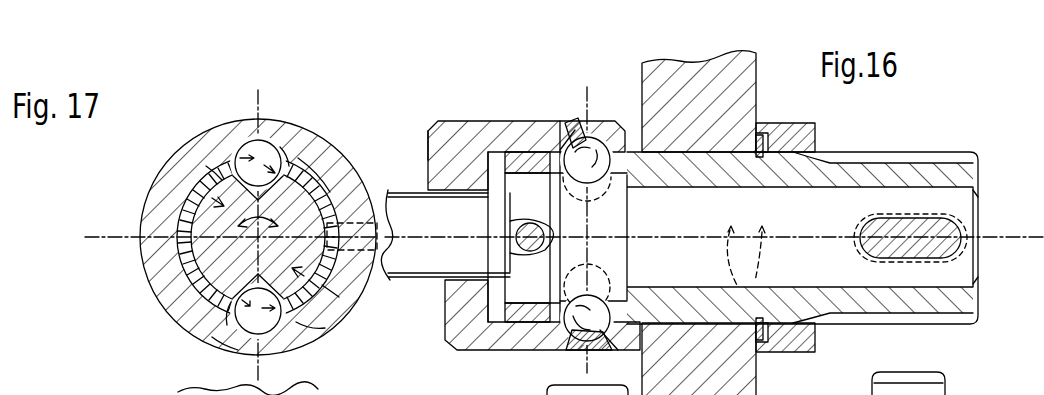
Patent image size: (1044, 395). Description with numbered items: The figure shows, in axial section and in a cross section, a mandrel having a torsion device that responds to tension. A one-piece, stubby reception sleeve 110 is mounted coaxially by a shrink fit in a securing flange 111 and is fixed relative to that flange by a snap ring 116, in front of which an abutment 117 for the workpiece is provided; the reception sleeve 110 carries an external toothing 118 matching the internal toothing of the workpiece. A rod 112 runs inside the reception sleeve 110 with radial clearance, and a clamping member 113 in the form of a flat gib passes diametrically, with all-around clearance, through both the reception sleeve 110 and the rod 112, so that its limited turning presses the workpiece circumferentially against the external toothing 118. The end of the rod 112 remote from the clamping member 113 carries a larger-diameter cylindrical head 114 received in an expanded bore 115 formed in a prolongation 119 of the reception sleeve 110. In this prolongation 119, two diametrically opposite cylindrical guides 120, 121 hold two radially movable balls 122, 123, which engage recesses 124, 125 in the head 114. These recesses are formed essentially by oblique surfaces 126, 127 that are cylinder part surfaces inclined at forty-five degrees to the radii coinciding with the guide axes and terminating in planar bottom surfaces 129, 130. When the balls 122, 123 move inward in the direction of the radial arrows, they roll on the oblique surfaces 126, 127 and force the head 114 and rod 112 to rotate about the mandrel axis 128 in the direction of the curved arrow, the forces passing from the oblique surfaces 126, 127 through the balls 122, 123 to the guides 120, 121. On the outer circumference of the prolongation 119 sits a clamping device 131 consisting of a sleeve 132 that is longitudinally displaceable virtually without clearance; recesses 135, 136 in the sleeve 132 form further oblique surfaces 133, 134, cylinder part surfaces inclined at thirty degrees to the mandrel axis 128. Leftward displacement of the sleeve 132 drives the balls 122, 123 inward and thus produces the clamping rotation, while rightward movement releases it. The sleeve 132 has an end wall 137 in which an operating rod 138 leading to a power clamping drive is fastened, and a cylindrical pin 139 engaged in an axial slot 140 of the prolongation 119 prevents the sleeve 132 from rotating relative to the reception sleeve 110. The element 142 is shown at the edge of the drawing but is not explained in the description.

In FIG. 16, the reception sleeve 110 is at (878, 168).
In FIG. 16, the securing flange 111 is at (743, 75).
In FIG. 16, the rod 112 is at (952, 264).
In FIG. 16, the clamping member 113 is at (935, 236).
In FIG. 17, the head 114 is at (207, 252).
In FIG. 16, the head 114 is at (612, 213).
In FIG. 16, the expanded bore 115 is at (522, 190).
In FIG. 16, the snap ring 116 is at (773, 145).
In FIG. 16, the abutment 117 is at (791, 338).
In FIG. 16, the external toothing 118 is at (945, 160).
In FIG. 17, the prolongation 119 is at (312, 173).
In FIG. 16, the prolongation 119 is at (523, 165).
In FIG. 17, the guide 120 is at (213, 168).
In FIG. 16, the guide 120 is at (532, 155).
In FIG. 17, the guide 121 is at (196, 332).
In FIG. 16, the guide 121 is at (535, 333).
In FIG. 17, the ball 122 is at (245, 142).
In FIG. 16, the ball 122 is at (593, 138).
In FIG. 17, the ball 123 is at (297, 330).
In FIG. 16, the ball 123 is at (565, 333).
In FIG. 17, the recess 124 is at (167, 183).
In FIG. 17, the recess 125 is at (310, 328).
In FIG. 17, the oblique surface 126 is at (286, 146).
In FIG. 16, the oblique surface 126 is at (580, 193).
In FIG. 17, the oblique surface 127 is at (170, 301).
In FIG. 16, the oblique surface 127 is at (580, 280).
In FIG. 17, the mandrel axis 128 is at (192, 252).
In FIG. 16, the mandrel axis 128 is at (820, 240).
In FIG. 17, the planar bottom surface 129 is at (194, 199).
In FIG. 17, the planar bottom surface 130 is at (335, 288).
In FIG. 16, the clamping device 131 is at (450, 106).
In FIG. 17, the sleeve 132 is at (222, 338).
In FIG. 16, the sleeve 132 is at (528, 138).
In FIG. 16, the oblique surface 133 is at (582, 116).
In FIG. 16, the oblique surface 134 is at (608, 337).
In FIG. 16, the recess 135 is at (557, 150).
In FIG. 16, the recess 136 is at (572, 337).
In FIG. 16, the end wall 137 is at (447, 155).
In FIG. 16, the operating rod 138 is at (410, 213).
In FIG. 16, the cylindrical pin 139 is at (510, 242).
In FIG. 16, the axial slot 140 is at (505, 218).
In FIG. 17, the support 142 is at (230, 388).